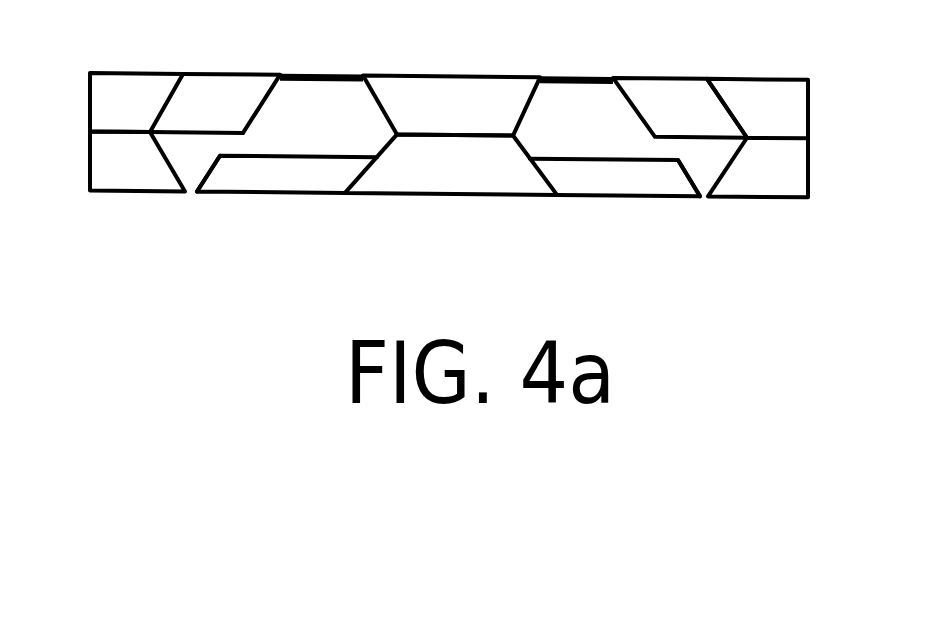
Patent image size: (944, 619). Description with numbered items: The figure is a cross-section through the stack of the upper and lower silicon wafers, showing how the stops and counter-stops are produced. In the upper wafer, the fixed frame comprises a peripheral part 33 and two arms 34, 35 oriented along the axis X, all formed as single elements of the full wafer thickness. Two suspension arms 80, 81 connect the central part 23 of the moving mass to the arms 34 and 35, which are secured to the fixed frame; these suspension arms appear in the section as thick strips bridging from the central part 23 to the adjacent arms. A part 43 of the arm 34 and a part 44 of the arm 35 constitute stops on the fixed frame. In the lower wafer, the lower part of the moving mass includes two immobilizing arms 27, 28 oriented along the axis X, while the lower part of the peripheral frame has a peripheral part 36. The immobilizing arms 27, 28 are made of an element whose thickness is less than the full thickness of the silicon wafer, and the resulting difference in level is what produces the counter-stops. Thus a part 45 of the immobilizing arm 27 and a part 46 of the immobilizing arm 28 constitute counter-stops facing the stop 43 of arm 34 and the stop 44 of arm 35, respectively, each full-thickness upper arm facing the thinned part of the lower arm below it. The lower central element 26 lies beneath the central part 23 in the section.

The central part of the moving mass 23 is at (458, 95).
The lower trapezoidal electrode segment 26 is at (474, 173).
The immobilizing arm 27 is at (330, 172).
The immobilizing arm 28 is at (592, 173).
The peripheral part 33 is at (113, 90).
The arm 34 is at (210, 88).
The arm 35 is at (697, 95).
The peripheral part 36 is at (150, 180).
The stop 43 is at (243, 93).
The stop 44 is at (660, 108).
The counter-stop 45 is at (223, 177).
The counter-stop 46 is at (665, 176).
The suspension arm 80 is at (328, 73).
The suspension arm 81 is at (585, 78).